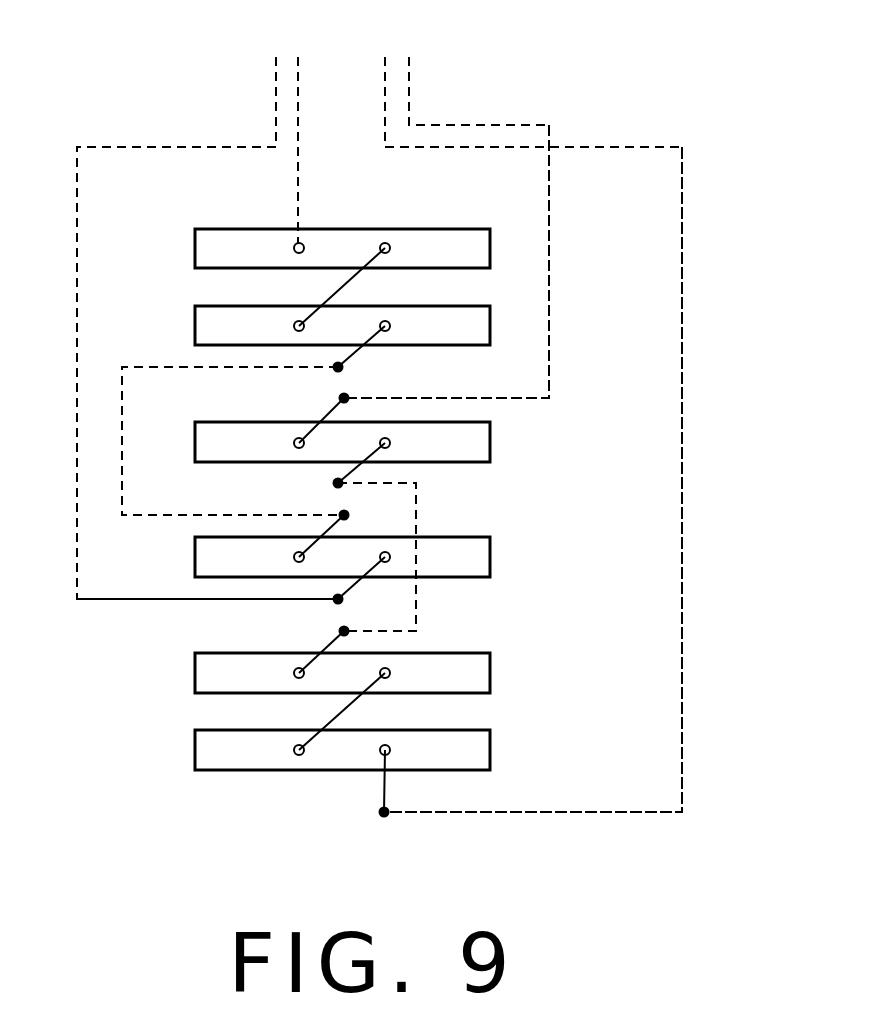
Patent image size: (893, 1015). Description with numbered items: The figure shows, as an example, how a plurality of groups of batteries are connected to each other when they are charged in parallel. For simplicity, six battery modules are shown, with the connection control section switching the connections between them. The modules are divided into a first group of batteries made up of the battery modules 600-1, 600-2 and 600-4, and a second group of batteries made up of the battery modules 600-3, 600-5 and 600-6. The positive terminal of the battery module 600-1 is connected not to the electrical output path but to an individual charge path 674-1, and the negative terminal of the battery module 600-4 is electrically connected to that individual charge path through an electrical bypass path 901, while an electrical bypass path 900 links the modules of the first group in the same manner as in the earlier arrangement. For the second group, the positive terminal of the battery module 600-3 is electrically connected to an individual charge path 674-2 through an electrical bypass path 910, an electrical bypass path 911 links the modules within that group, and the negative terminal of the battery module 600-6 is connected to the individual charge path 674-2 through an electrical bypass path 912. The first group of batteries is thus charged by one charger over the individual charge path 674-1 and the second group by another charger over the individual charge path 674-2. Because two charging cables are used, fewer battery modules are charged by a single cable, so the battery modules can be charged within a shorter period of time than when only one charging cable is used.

The individual charge path 674-1 is at (207, 300).
The individual charge path 674-2 is at (513, 407).
The battery module 600-1 is at (375, 229).
The battery module 600-2 is at (212, 306).
The battery module 600-3 is at (490, 441).
The battery module 600-4 is at (490, 556).
The battery module 600-5 is at (490, 672).
The battery module 600-6 is at (490, 749).
The electrical bypass path 900 is at (122, 367).
The electrical bypass path 901 is at (90, 600).
The electrical bypass path 910 is at (549, 358).
The electrical bypass path 911 is at (416, 492).
The electrical bypass path 912 is at (682, 492).